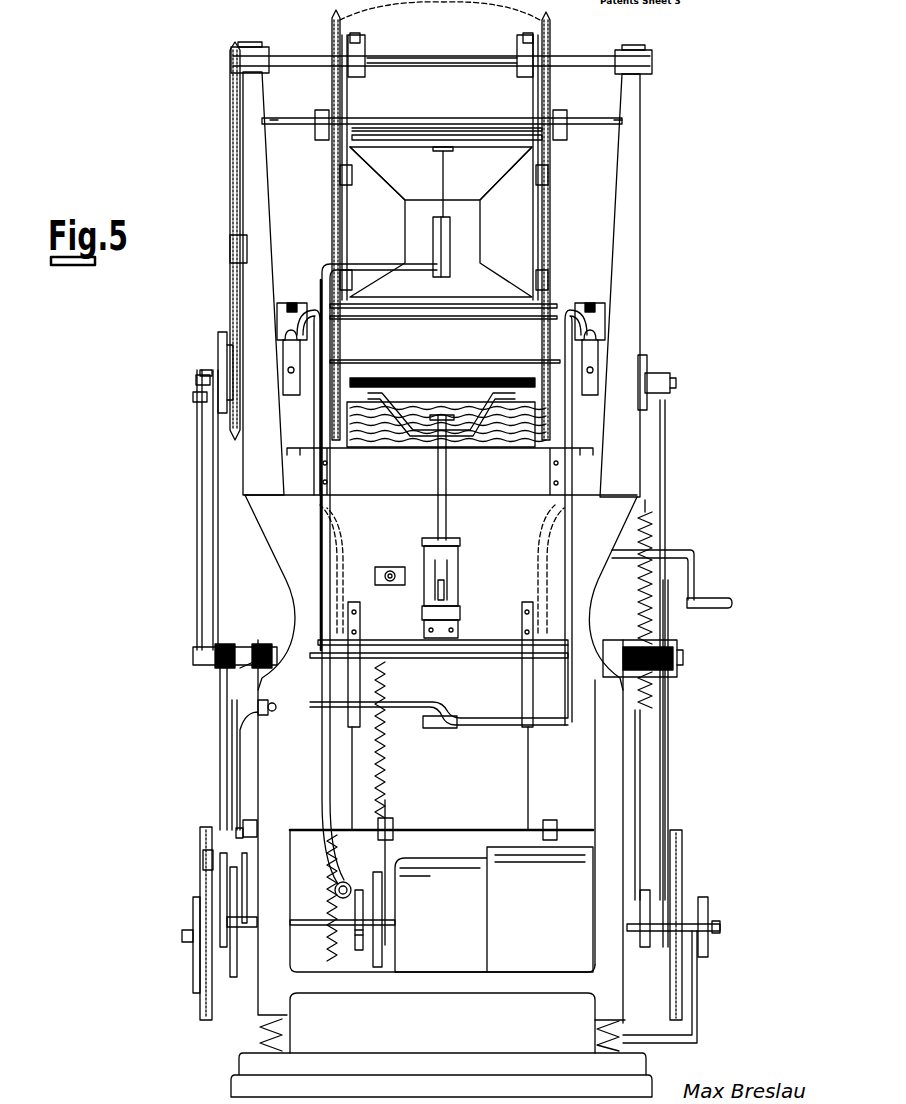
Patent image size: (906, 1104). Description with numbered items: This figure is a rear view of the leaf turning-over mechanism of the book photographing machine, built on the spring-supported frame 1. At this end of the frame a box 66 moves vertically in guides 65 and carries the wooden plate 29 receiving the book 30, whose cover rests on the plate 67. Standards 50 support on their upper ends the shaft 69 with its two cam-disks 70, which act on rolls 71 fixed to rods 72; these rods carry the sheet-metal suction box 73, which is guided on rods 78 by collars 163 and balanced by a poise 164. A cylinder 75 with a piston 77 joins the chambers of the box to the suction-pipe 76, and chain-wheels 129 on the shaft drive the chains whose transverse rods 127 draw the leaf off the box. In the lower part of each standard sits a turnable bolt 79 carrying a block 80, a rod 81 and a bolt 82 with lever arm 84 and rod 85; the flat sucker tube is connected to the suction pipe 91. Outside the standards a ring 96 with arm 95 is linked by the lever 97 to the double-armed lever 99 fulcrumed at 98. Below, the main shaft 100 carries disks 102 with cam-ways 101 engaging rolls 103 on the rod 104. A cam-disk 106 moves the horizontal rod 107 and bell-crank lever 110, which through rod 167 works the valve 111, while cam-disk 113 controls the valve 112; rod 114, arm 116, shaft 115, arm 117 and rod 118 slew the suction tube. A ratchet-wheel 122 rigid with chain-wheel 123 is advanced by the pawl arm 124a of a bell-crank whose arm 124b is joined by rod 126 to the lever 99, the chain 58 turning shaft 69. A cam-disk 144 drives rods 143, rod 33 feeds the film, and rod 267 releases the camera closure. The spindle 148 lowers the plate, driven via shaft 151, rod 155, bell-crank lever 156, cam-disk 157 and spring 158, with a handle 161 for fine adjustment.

The frame 1 is at (300, 548).
The wooden plate 29 is at (478, 393).
The book 30 is at (510, 393).
The rod 33 is at (182, 936).
The standards 50 is at (262, 132).
The chain 58 is at (232, 96).
The guides 65 is at (710, 955).
The box 66 is at (441, 471).
The plate 67 is at (370, 378).
The shaft 69 is at (596, 58).
The cam-disks 70 is at (366, 70).
The rolls 71 is at (362, 38).
The rods 72 is at (347, 96).
The sheet-metal box 73 is at (462, 280).
The cylinder 75 is at (440, 212).
The suction-pipe 76 is at (326, 262).
The piston 77 is at (440, 167).
The rods 78 is at (345, 218).
The turnable bolt 79 is at (198, 385).
The block 80 is at (291, 395).
The rod 81 is at (648, 372).
The turnable bolt 82 is at (290, 345).
The lever arm 84 is at (285, 306).
The rod 85 is at (292, 302).
The suction pipe 91 is at (320, 510).
The arm 95 is at (203, 410).
The ring 96 is at (205, 396).
The lever 97 is at (200, 456).
The fulcrum 98 is at (240, 668).
The lever 99 is at (215, 647).
The main shaft 100 is at (722, 927).
The cam-way 101 is at (200, 1022).
The disk 102 is at (205, 870).
The roll 103 is at (207, 860).
The rod 104 is at (223, 707).
The cam-disk 106 is at (228, 972).
The horizontal rod 107 is at (235, 930).
The bell-crank lever 110 is at (240, 888).
The valve 111 is at (258, 706).
The valve 112 is at (335, 893).
The cam-disk 113 is at (356, 940).
The rod 114 is at (352, 782).
The shaft 115 is at (495, 840).
The arm 116 is at (550, 830).
The arm 117 is at (245, 828).
The rod 118 is at (243, 838).
The ratchet-wheel 122 is at (222, 362).
The chain-wheel 123 is at (218, 340).
The bell-crank lever arm 124a is at (205, 382).
The bell-crank lever arm 124b is at (239, 481).
The rod 126 is at (215, 504).
The transverse rods 127 is at (500, 140).
The chain-wheels 129 is at (440, 14).
The rods 143 is at (640, 748).
The cam-disk 144 is at (650, 920).
The spindle 148 is at (447, 585).
The shaft 151 is at (696, 578).
The rod 155 is at (385, 802).
The bell-crank lever 156 is at (392, 840).
The cam-disk 157 is at (360, 892).
The spring 158 is at (385, 765).
The handle 161 is at (381, 564).
The collars or sleeves 163 is at (548, 180).
The poise 164 is at (322, 112).
The rod 167 is at (235, 778).
The rod 267 is at (700, 1016).